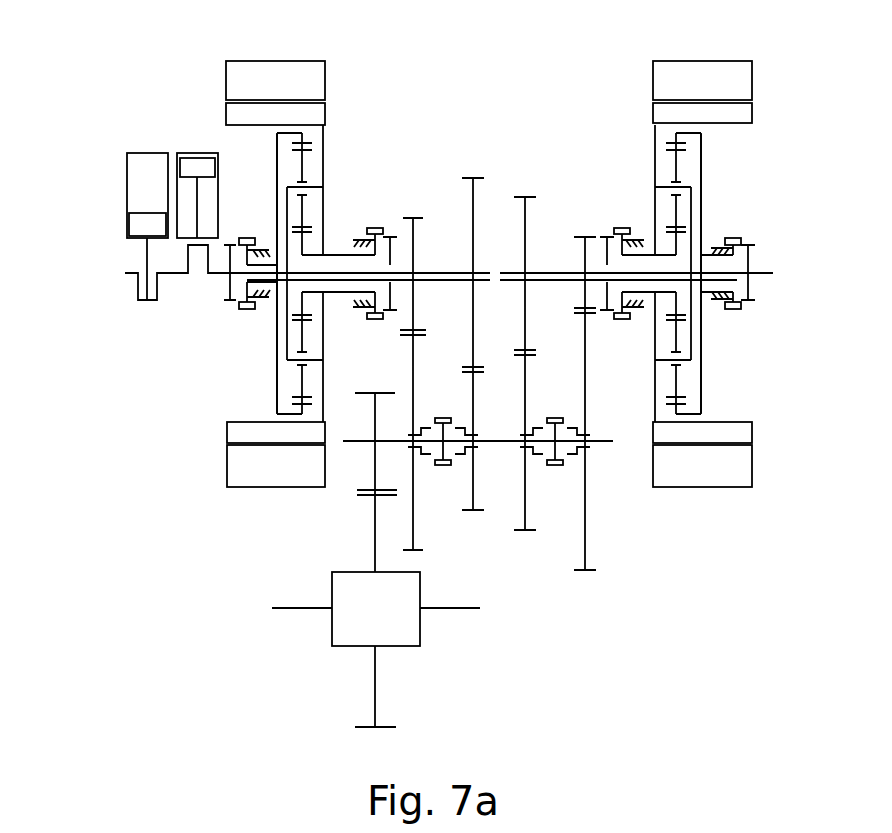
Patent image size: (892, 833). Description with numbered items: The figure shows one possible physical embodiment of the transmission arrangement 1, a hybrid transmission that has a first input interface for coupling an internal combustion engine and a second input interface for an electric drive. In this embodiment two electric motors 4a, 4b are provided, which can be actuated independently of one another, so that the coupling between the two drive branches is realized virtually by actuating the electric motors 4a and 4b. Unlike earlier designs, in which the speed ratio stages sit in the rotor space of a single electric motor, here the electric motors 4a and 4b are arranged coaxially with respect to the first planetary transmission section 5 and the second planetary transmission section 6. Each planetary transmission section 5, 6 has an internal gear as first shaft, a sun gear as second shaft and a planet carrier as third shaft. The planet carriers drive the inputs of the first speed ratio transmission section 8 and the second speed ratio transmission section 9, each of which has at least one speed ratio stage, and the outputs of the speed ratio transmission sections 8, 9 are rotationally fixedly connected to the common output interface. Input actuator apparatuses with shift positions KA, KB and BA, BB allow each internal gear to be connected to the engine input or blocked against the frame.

The transmission arrangement 1 is at (140, 75).
The electric motor 4a is at (683, 64).
The electric motor 4b is at (262, 64).
The first planetary transmission section 5 is at (720, 339).
The second planetary transmission section 6 is at (265, 338).
The first speed ratio transmission section 8 is at (603, 575).
The second speed ratio transmission section 9 is at (490, 553).